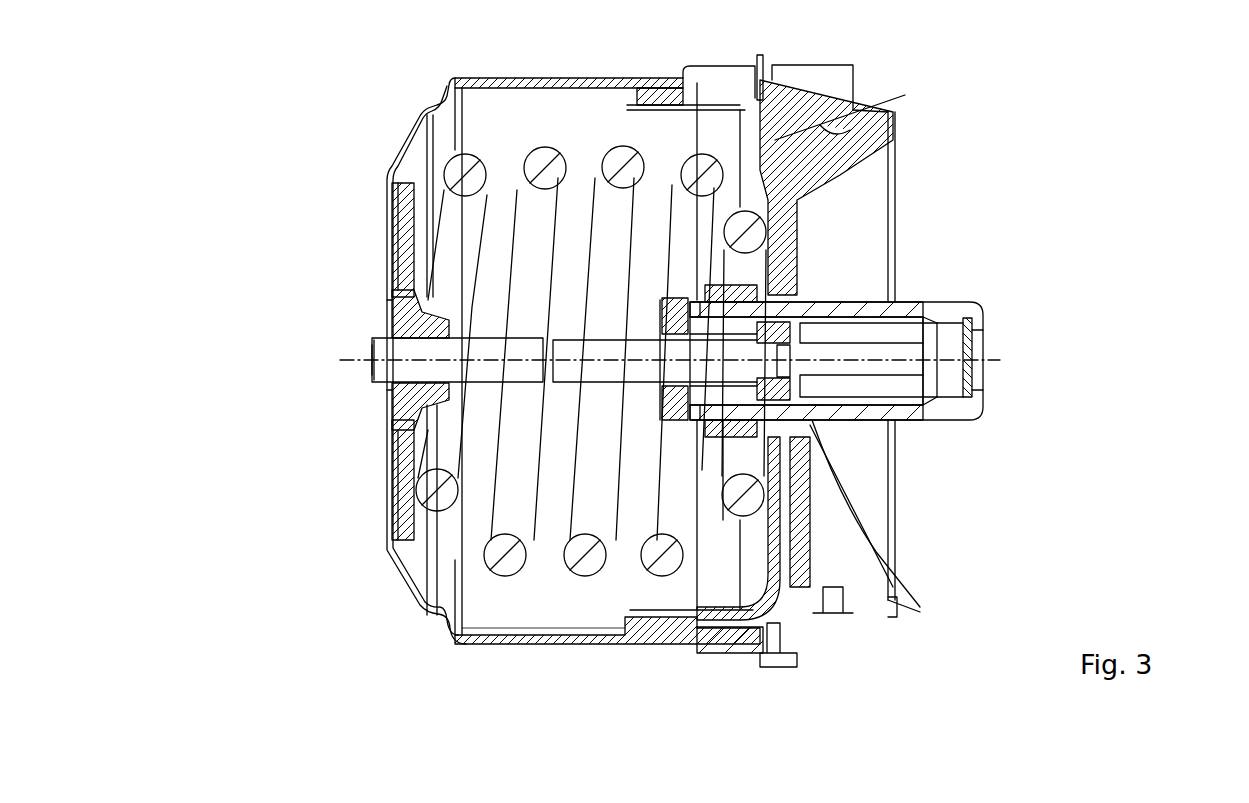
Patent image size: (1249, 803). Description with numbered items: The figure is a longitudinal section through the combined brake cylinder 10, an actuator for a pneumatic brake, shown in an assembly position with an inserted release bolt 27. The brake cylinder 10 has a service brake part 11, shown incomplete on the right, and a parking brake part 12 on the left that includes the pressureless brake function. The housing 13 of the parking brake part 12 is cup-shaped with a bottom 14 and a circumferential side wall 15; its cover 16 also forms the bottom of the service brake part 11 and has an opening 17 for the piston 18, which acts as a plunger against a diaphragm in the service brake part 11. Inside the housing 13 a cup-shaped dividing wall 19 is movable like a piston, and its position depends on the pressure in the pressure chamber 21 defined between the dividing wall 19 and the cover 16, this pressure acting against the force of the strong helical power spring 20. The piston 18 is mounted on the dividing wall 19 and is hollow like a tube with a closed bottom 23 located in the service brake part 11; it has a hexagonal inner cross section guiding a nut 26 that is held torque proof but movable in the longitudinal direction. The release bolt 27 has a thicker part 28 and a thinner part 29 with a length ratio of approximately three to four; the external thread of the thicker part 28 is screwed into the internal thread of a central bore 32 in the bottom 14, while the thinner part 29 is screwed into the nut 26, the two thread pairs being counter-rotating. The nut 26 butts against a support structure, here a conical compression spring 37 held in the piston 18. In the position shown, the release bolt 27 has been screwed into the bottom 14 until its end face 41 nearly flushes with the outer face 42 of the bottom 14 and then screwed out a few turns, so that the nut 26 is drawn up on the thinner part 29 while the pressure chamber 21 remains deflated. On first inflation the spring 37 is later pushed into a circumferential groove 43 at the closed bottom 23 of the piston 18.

The combined brake cylinder 10 is at (1092, 170).
The service brake part 11 is at (920, 650).
The parking brake part 12 is at (460, 667).
The housing 13 is at (398, 128).
The bottom 14 is at (387, 470).
The circumferential side wall 15 is at (570, 643).
The cover 16 is at (808, 158).
The opening 17 is at (815, 293).
The piston 18 is at (923, 420).
The dividing wall 19 is at (775, 135).
The power spring 20 is at (548, 560).
The pressure chamber 21 is at (790, 242).
The closed bottom 23 is at (990, 340).
The nut 26 is at (800, 323).
The release bolt 27 is at (376, 382).
The thicker part 28 is at (405, 352).
The thinner part 29 is at (603, 372).
The central bore 32 is at (380, 330).
The compression spring 37 is at (803, 343).
The end face 41 is at (370, 367).
The outer face 42 is at (385, 437).
The circumferential groove 43 is at (963, 395).